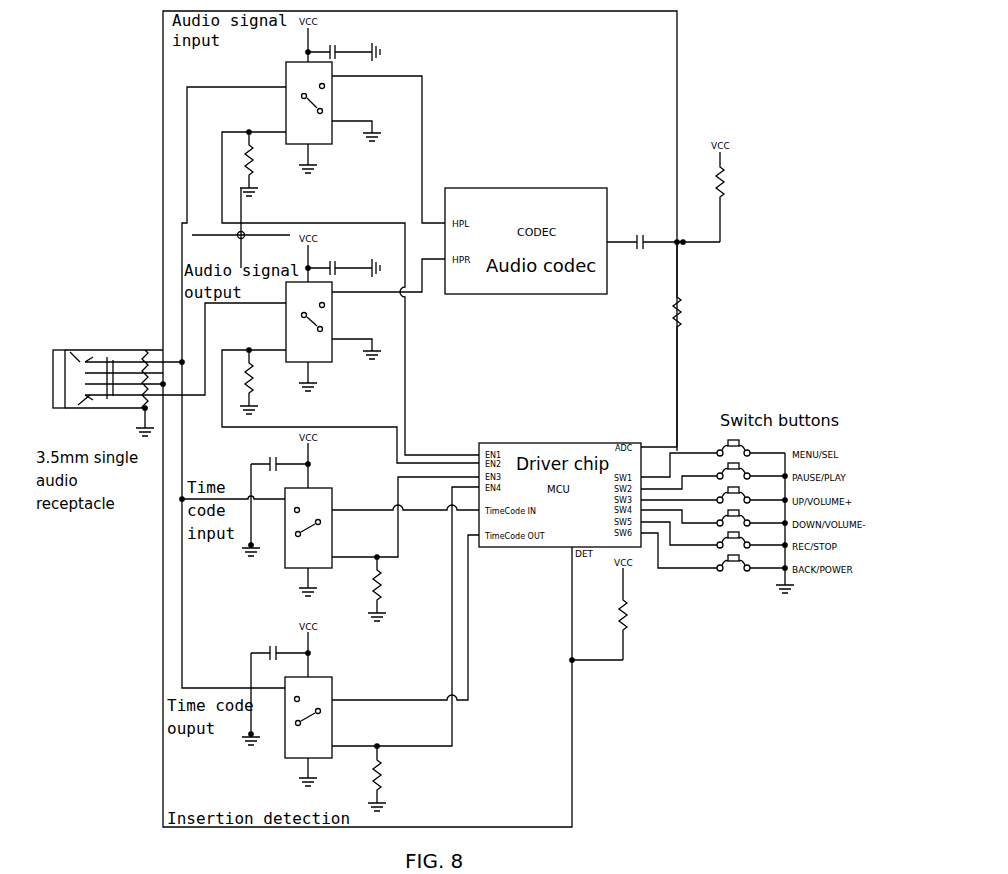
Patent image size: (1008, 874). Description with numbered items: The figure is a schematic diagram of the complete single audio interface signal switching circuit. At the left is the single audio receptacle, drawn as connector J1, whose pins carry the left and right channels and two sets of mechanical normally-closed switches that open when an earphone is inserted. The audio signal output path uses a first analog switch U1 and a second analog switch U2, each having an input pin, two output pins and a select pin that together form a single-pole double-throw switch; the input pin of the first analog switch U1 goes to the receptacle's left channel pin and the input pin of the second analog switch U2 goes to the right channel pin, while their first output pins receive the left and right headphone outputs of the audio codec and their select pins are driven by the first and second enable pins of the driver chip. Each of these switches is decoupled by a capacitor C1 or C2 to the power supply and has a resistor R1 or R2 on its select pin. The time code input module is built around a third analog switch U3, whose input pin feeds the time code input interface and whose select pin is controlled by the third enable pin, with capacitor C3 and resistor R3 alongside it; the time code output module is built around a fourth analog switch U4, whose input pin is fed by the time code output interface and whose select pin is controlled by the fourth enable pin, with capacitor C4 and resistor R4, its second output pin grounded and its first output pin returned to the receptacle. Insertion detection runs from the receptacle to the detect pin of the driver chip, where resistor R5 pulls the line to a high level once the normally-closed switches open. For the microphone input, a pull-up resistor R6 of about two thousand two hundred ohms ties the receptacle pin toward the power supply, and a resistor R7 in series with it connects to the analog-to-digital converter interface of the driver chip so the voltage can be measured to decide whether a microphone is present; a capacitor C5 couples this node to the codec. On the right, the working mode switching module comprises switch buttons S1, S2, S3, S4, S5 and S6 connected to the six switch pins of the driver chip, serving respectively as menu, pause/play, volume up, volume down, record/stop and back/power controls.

The first analog switch U1 is at (319, 103).
The second analog switch U2 is at (319, 322).
The third analog switch U3 is at (320, 523).
The fourth analog switch U4 is at (322, 712).
The resistor 100K R1 is at (259, 164).
The resistor 100K R2 is at (259, 382).
The resistor 100K R3 is at (386, 582).
The resistor 100K R4 is at (386, 772).
The resistor R5 is at (635, 614).
The pull-up resistor R6 is at (729, 197).
The resistor R7 is at (691, 346).
The capacitor 10nF C1 is at (344, 48).
The capacitor 10nF C2 is at (344, 264).
The capacitor 10nF C3 is at (279, 462).
The capacitor 10nF C4 is at (279, 651).
The capacitor 10nF C5 is at (663, 242).
The 3.5mm single audio receptacle J1 is at (115, 371).
The switch button S1 is at (722, 447).
The switch button S2 is at (722, 470).
The switch button S3 is at (722, 494).
The switch button S4 is at (722, 517).
The switch button S5 is at (722, 539).
The switch button S6 is at (722, 562).